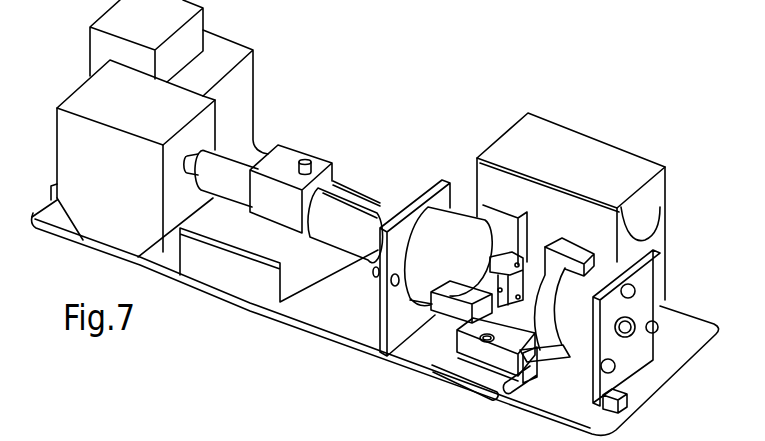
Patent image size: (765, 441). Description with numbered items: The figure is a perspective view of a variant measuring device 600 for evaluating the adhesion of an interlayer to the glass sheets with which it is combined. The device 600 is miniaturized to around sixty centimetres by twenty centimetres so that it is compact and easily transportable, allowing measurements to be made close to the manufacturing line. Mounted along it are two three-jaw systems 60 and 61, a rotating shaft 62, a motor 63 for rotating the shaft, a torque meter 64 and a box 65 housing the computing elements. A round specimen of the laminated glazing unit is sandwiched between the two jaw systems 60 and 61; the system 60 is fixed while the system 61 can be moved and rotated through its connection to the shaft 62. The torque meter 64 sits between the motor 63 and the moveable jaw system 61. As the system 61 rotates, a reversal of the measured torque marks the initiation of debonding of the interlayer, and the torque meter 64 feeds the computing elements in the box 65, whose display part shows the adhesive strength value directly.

The measuring device 600 is at (423, 76).
The three-jaw system 60 is at (543, 283).
The three-jaw system 61 is at (494, 226).
The rotating shaft 62 is at (350, 213).
The motor 63 is at (224, 43).
The torque meter 64 is at (287, 150).
The box 65 is at (547, 128).